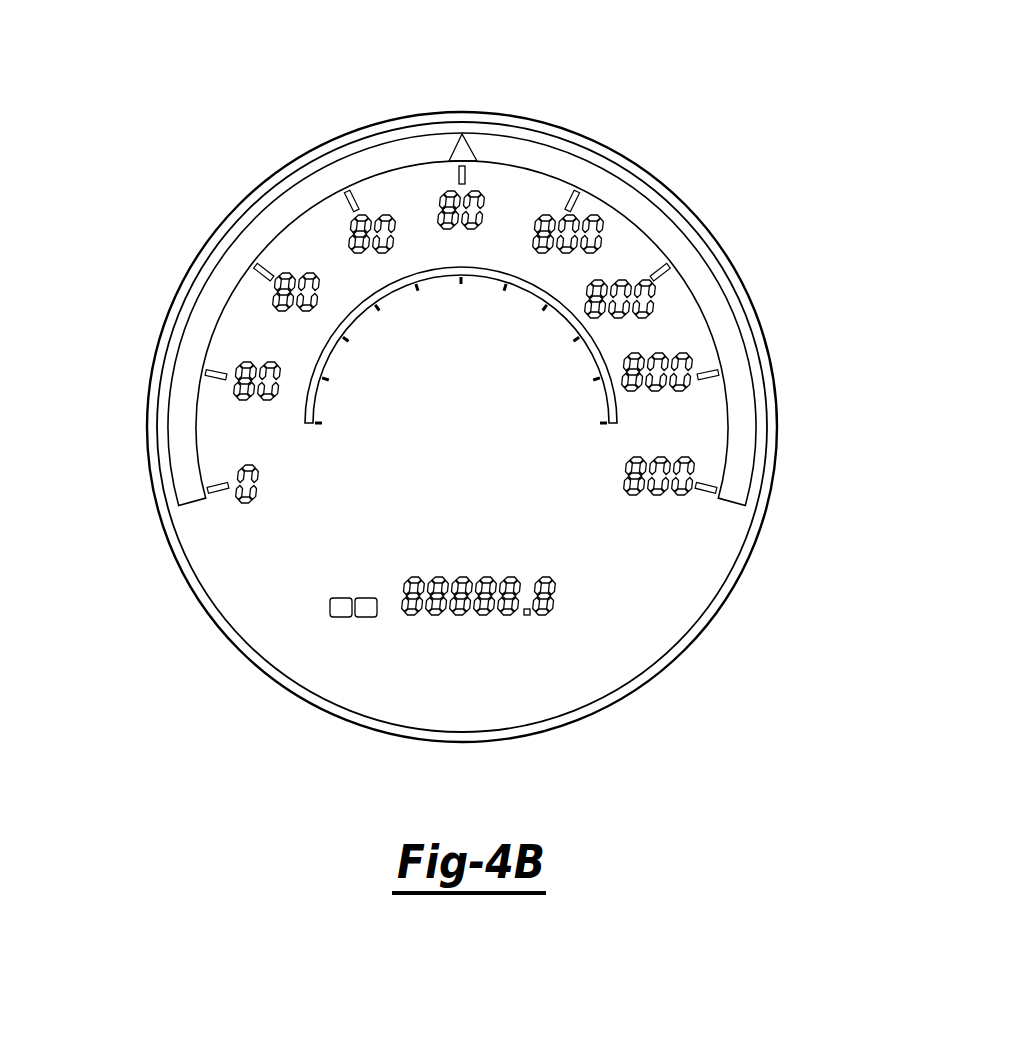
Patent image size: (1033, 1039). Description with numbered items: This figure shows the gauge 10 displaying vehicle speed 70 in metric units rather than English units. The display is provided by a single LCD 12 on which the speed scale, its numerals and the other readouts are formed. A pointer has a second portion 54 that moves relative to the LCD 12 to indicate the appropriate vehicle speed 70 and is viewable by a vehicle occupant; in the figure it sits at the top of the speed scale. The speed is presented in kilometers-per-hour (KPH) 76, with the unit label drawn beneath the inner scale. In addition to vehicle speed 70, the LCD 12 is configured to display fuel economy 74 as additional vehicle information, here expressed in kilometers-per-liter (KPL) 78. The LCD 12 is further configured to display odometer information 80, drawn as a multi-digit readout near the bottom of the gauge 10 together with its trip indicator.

The instrument cluster gauge 10 is at (458, 373).
The LCD 12 is at (755, 545).
The second portion 54 is at (462, 134).
The vehicle speed 70 is at (237, 383).
The fuel economy 74 is at (355, 514).
The kilometers-per-hour (KPH) 76 is at (507, 478).
The kilometers-per-liter (KPL) 78 is at (350, 548).
The odometer information 80 is at (560, 593).